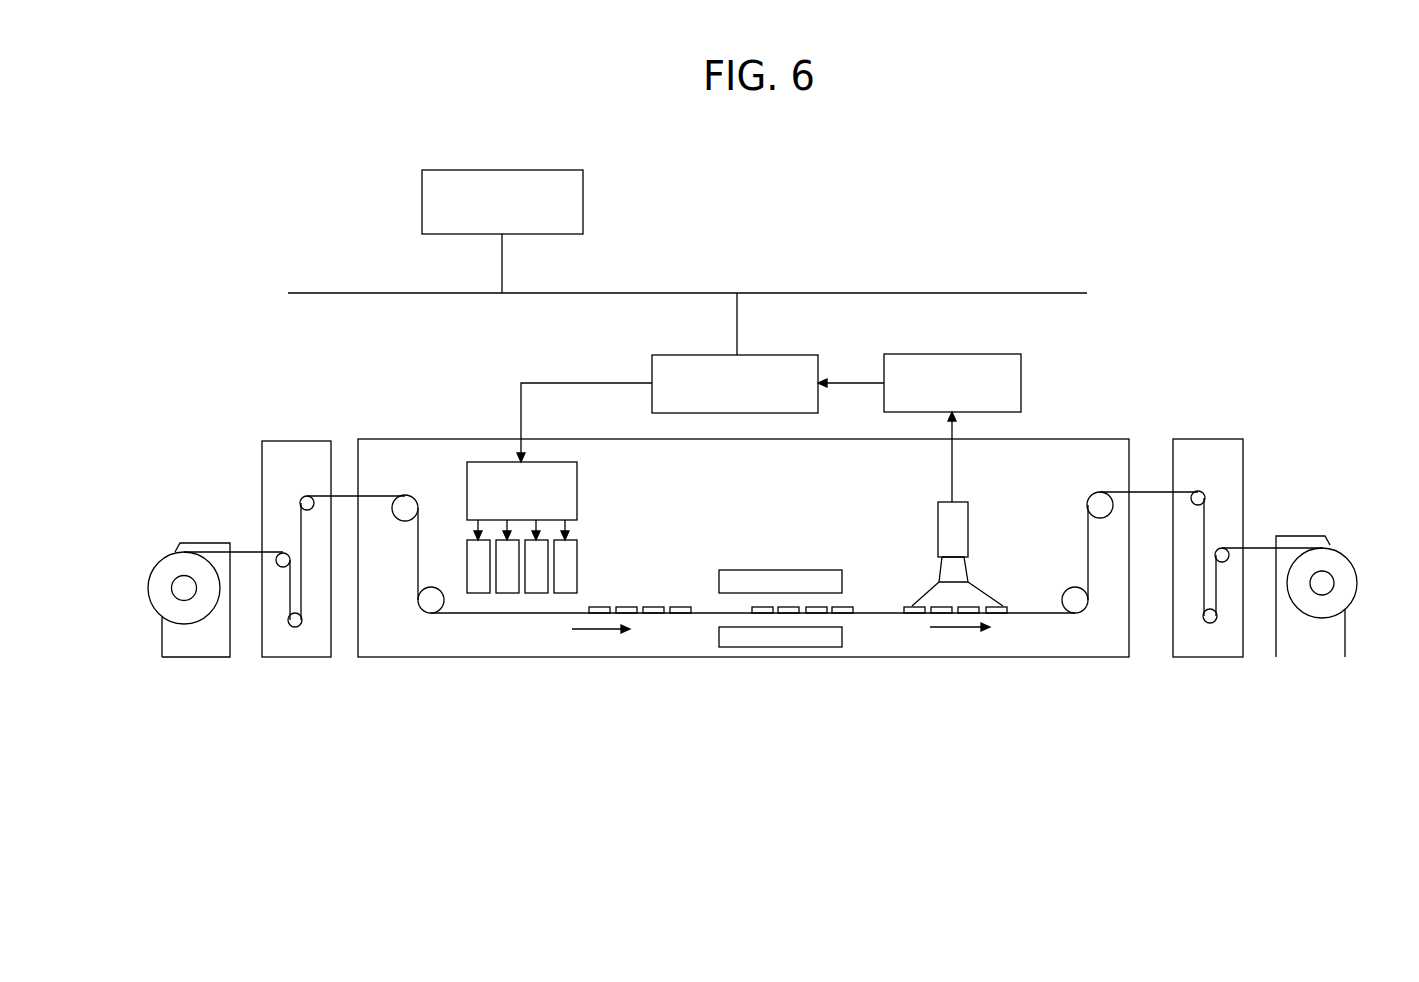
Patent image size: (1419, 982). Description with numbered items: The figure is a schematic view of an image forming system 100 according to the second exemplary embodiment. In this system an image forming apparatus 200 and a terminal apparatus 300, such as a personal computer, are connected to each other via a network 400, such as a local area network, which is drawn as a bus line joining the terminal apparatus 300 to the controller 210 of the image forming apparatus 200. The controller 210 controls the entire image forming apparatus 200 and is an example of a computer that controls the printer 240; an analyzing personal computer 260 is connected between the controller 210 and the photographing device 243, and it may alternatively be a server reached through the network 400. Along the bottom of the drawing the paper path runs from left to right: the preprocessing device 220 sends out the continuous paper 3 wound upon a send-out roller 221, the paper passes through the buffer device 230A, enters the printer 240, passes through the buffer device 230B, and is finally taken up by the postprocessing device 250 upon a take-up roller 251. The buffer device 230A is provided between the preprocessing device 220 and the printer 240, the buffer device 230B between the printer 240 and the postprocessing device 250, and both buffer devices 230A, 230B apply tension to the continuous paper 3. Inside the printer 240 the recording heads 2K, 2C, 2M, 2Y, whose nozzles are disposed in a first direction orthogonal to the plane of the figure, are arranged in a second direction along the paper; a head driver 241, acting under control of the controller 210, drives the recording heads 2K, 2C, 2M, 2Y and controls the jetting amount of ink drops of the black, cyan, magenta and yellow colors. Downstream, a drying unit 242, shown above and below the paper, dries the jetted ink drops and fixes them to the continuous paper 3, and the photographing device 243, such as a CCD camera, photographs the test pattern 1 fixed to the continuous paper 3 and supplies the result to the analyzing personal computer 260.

The image forming system 100 is at (925, 205).
The image forming apparatus 200 is at (1182, 375).
The terminal apparatus 300 is at (500, 170).
The network 400 is at (1035, 293).
The controller 210 is at (776, 355).
The analyzing personal computer 260 is at (953, 354).
The preprocessing device 220 is at (193, 542).
The send-out roller 221 is at (156, 565).
The continuous paper 3 is at (248, 548).
The buffer device 230A is at (294, 441).
The printer 240 is at (1085, 438).
The buffer device 230B is at (1210, 439).
The head driver 241 is at (578, 487).
The recording head 2K is at (478, 593).
The recording head 2C is at (508, 593).
The recording head 2M is at (537, 593).
The recording head 2Y is at (565, 593).
The drying unit 242 is at (780, 570).
The photographing device 243 is at (969, 512).
The test pattern 1 is at (589, 604).
The postprocessing device 250 is at (1300, 536).
The take-up roller 251 is at (1353, 560).